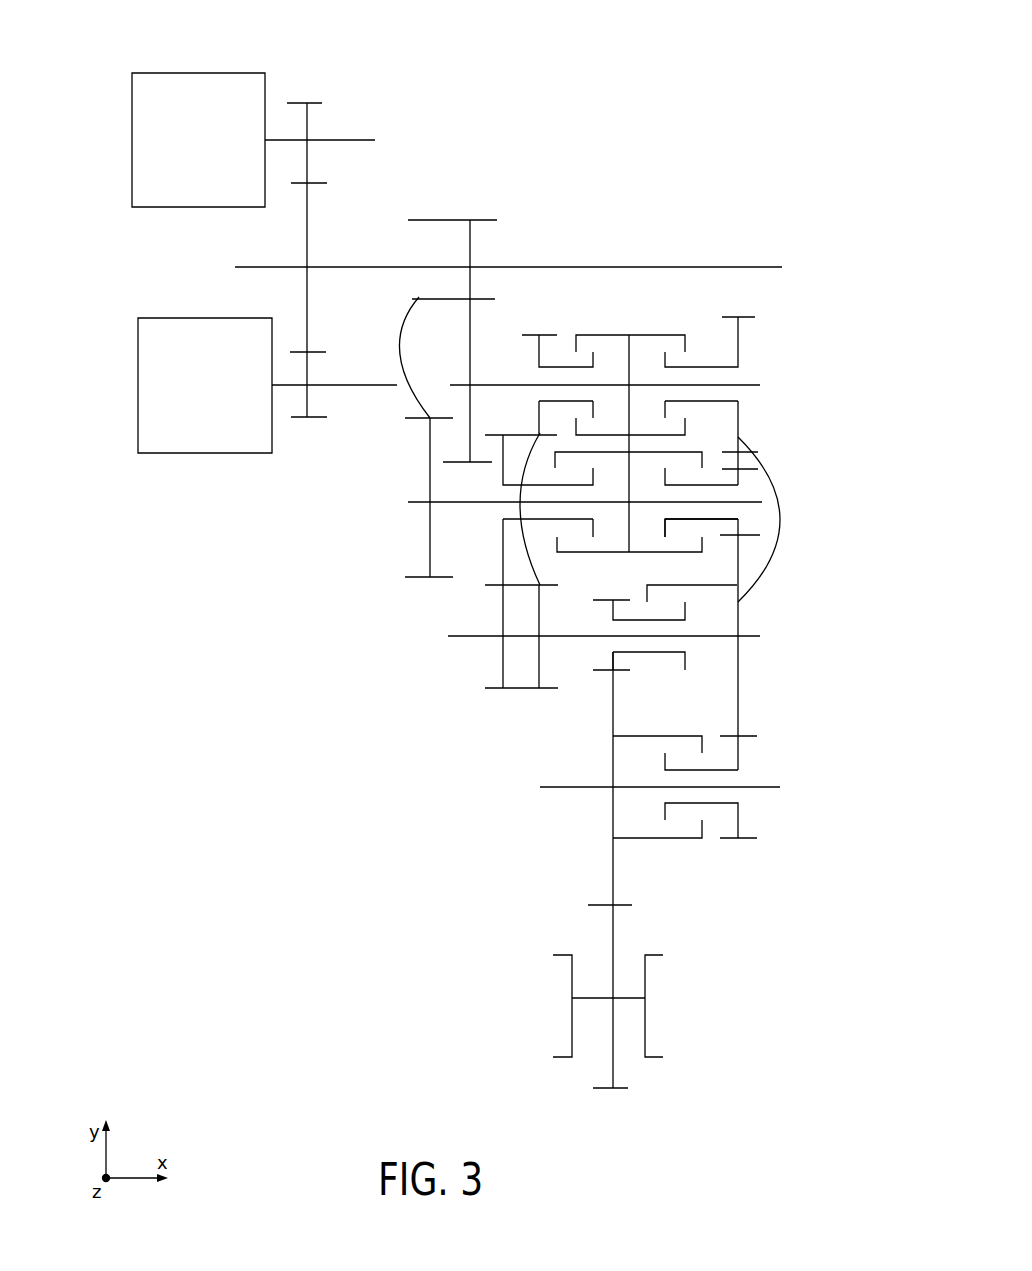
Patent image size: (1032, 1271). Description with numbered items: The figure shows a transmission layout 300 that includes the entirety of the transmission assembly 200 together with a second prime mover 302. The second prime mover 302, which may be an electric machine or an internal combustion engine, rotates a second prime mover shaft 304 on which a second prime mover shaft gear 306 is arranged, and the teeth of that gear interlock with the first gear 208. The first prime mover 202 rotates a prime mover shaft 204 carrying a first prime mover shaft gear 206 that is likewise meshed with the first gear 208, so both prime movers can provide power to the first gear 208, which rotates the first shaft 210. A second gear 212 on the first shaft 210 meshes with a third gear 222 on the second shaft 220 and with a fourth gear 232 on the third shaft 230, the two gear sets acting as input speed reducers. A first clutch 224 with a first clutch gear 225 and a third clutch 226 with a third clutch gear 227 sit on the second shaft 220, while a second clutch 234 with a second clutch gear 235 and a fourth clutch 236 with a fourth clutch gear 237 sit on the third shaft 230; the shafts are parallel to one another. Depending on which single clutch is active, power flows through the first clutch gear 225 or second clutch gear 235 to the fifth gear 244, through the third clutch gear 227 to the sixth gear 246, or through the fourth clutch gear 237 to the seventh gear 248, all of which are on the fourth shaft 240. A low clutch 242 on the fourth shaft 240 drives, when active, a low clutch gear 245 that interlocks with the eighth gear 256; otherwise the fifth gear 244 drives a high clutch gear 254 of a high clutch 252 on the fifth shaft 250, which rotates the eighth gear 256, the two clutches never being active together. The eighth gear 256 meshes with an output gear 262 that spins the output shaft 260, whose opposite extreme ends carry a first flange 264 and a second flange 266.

The transmission layout 300 is at (703, 48).
The transmission assembly 200 is at (797, 120).
The second prime mover 302 is at (132, 73).
The second prime mover shaft 304 is at (353, 140).
The second prime mover shaft gear 306 is at (315, 103).
The first gear 208 is at (318, 185).
The first shaft 210 is at (280, 267).
The second gear 212 is at (440, 219).
The prime mover 202 is at (138, 318).
The prime mover shaft 204 is at (360, 385).
The first prime mover shaft gear 206 is at (315, 418).
The third gear 222 is at (470, 333).
The fourth gear 232 is at (428, 516).
The third clutch gear 227 is at (543, 333).
The third clutch 226 is at (587, 315).
The first clutch 224 is at (698, 313).
The first clutch gear 225 is at (743, 315).
The second shaft 220 is at (760, 385).
The third shaft 230 is at (752, 500).
The fourth clutch gear 237 is at (502, 567).
The second clutch gear 235 is at (740, 527).
The fourth clutch 236 is at (578, 572).
The second clutch 234 is at (718, 557).
The seventh gear 248 is at (502, 653).
The sixth gear 246 is at (538, 658).
The fourth shaft 240 is at (752, 640).
The low clutch gear 245 is at (612, 600).
The fifth gear 244 is at (740, 670).
The low clutch 242 is at (595, 660).
The fifth shaft 250 is at (780, 787).
The high clutch gear 254 is at (740, 812).
The high clutch 252 is at (593, 822).
The eighth gear 256 is at (612, 857).
The output shaft 260 is at (622, 998).
The first flange 264 is at (572, 980).
The second flange 266 is at (645, 975).
The output gear 262 is at (605, 1075).